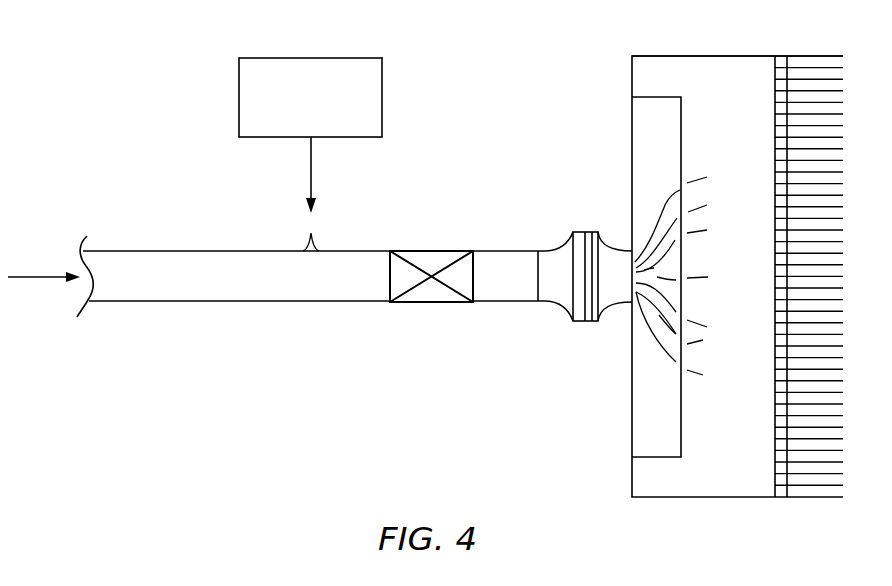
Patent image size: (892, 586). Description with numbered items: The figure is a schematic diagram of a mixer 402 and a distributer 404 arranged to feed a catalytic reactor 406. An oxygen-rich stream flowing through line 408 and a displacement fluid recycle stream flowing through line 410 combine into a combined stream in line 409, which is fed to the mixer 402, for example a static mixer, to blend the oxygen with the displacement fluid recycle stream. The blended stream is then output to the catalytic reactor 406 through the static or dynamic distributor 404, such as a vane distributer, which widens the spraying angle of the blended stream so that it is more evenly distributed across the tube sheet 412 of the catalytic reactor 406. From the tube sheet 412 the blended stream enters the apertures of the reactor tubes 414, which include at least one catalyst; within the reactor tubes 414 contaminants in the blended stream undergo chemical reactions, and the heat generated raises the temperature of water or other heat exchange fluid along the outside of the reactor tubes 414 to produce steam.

The mixer 402 is at (434, 250).
The distributer 404 is at (632, 392).
The catalytic reactor 406 is at (680, 56).
The line 408 is at (311, 169).
The line 409 is at (473, 304).
The line 410 is at (37, 278).
The tube sheet 412 is at (775, 497).
The reactor tubes 414 is at (820, 497).